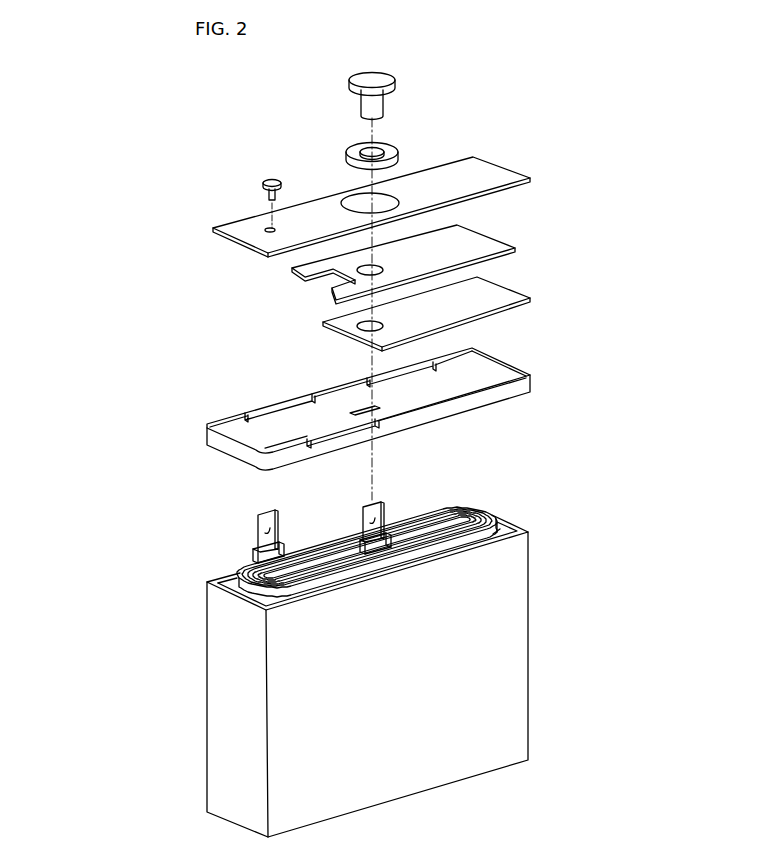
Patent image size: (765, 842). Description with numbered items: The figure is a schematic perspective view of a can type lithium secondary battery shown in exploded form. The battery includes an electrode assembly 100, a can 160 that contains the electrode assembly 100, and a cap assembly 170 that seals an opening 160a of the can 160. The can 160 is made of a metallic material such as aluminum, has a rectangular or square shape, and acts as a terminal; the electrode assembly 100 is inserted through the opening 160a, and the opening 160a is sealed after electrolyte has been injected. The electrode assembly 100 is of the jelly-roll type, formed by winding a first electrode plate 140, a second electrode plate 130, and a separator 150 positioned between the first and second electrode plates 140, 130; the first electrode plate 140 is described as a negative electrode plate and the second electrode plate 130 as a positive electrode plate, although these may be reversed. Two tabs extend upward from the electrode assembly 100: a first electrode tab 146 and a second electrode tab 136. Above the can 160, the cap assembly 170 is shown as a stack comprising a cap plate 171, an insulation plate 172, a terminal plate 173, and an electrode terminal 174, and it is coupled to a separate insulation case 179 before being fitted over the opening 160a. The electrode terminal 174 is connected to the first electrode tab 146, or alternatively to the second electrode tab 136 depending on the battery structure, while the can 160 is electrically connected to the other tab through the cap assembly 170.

The electrode assembly 100 is at (578, 458).
The second electrode plate 130 is at (473, 510).
The second electrode tab 136 is at (258, 542).
The first electrode plate 140 is at (498, 518).
The first electrode tab 146 is at (363, 523).
The separator 150 is at (484, 511).
The can 160 is at (512, 589).
The opening 160a is at (518, 529).
The cap assembly 170 is at (137, 190).
The cap plate 171 is at (230, 236).
The insulation plate 172 is at (312, 268).
The terminal plate 173 is at (323, 323).
The electrode terminal 174 is at (347, 82).
The insulation case 179 is at (290, 411).